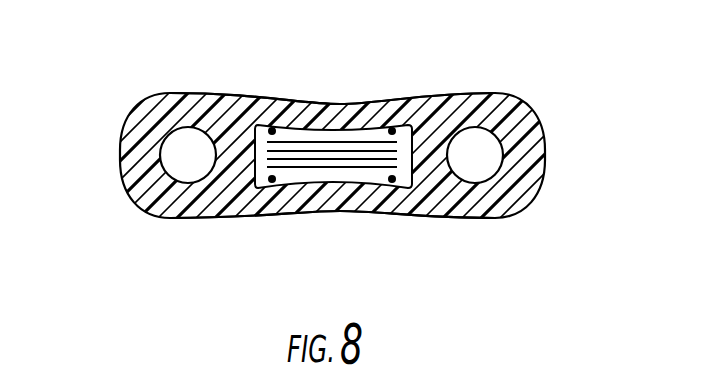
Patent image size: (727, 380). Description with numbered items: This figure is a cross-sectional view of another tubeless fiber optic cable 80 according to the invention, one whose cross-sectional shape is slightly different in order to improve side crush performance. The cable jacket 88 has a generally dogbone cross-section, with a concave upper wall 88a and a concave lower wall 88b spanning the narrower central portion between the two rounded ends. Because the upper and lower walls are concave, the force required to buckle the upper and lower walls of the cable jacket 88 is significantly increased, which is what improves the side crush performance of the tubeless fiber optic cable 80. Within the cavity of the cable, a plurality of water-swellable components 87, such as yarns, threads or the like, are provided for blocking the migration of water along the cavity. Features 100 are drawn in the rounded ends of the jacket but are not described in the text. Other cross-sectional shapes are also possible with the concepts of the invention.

The tubeless fiber optic cable 80 is at (350, 162).
The water-swellable components 87 is at (272, 131).
The cable jacket 88 is at (177, 210).
The concave upper wall 88a is at (367, 110).
The concave lower wall 88b is at (347, 200).
The pin aperture 100 is at (175, 169).